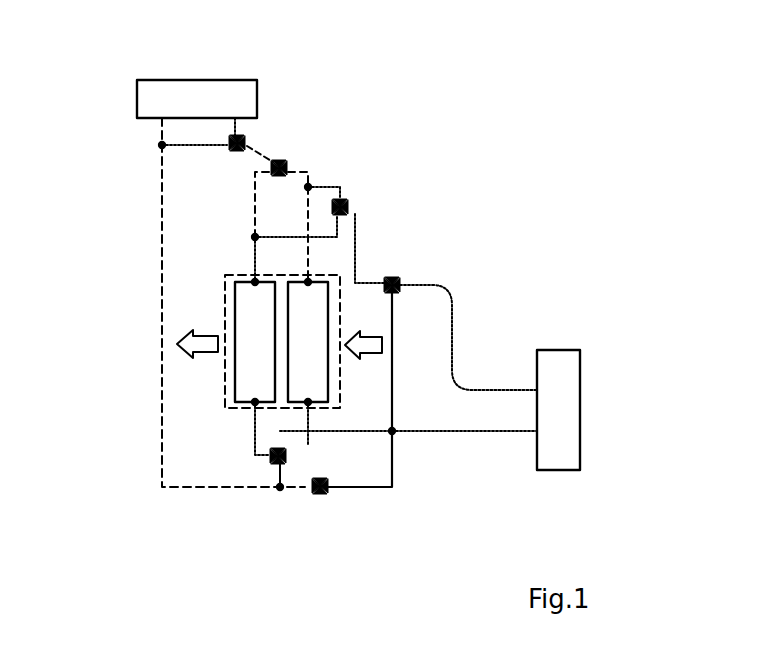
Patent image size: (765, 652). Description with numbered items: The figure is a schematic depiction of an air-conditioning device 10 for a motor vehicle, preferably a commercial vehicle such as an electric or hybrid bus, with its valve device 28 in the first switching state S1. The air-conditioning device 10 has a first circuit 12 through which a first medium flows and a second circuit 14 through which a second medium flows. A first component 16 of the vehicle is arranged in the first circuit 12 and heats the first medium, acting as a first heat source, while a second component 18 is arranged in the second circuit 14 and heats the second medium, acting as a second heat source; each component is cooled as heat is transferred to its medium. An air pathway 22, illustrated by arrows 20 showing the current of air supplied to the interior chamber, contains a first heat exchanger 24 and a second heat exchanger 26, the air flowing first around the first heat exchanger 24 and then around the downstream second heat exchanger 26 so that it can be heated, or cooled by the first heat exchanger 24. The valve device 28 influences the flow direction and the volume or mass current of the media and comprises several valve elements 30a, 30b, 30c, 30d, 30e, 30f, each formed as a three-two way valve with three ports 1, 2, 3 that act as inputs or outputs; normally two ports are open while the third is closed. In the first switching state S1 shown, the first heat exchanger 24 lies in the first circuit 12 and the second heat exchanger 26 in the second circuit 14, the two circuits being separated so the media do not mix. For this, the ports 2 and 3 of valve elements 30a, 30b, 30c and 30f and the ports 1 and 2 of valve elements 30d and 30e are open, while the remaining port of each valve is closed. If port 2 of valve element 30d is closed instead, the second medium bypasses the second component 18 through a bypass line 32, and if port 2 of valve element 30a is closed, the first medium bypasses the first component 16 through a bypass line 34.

The air-conditioning device 10 is at (380, 86).
The first circuit 12 is at (147, 347).
The second circuit 14 is at (421, 245).
The first component 16 is at (192, 80).
The second component 18 is at (565, 393).
The arrows 20 is at (207, 333).
The air pathway 22 is at (207, 366).
The first heat exchanger 24 is at (322, 385).
The second heat exchanger 26 is at (250, 280).
The valve device 28 is at (372, 156).
The valve element 30a is at (220, 152).
The valve element 30b is at (302, 158).
The valve element 30c is at (352, 201).
The valve element 30d is at (429, 283).
The valve element 30e is at (325, 498).
The valve element 30f is at (266, 474).
The bypass line 32 is at (393, 392).
The bypass line 34 is at (162, 148).
The first switching state S1 is at (112, 491).
The port 1 is at (226, 141).
The port 2 is at (240, 138).
The port 3 is at (239, 152).